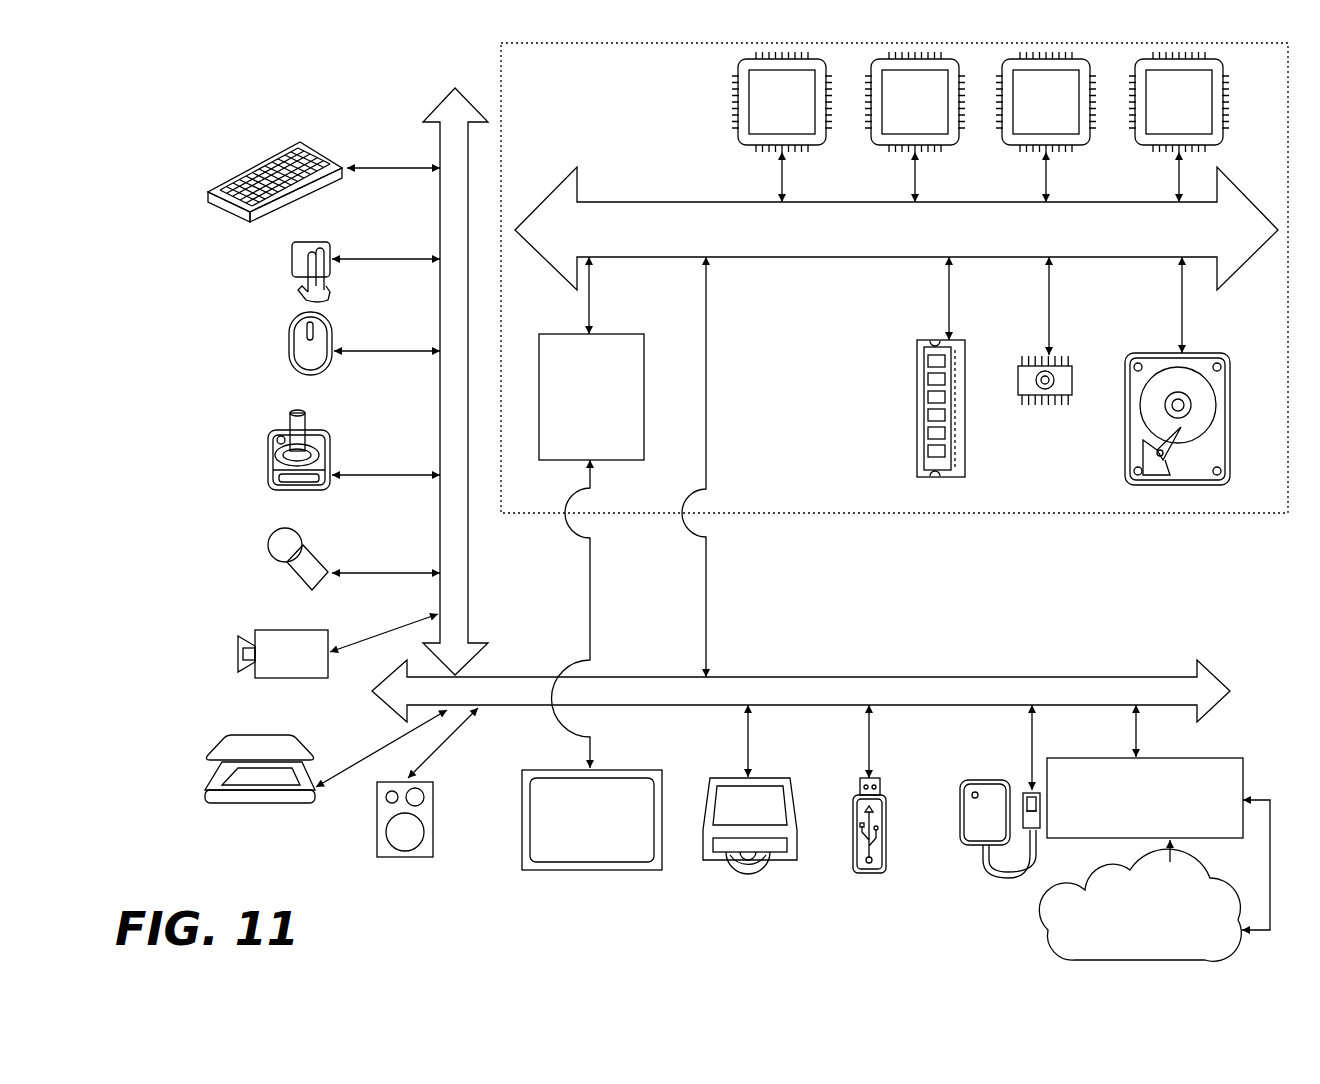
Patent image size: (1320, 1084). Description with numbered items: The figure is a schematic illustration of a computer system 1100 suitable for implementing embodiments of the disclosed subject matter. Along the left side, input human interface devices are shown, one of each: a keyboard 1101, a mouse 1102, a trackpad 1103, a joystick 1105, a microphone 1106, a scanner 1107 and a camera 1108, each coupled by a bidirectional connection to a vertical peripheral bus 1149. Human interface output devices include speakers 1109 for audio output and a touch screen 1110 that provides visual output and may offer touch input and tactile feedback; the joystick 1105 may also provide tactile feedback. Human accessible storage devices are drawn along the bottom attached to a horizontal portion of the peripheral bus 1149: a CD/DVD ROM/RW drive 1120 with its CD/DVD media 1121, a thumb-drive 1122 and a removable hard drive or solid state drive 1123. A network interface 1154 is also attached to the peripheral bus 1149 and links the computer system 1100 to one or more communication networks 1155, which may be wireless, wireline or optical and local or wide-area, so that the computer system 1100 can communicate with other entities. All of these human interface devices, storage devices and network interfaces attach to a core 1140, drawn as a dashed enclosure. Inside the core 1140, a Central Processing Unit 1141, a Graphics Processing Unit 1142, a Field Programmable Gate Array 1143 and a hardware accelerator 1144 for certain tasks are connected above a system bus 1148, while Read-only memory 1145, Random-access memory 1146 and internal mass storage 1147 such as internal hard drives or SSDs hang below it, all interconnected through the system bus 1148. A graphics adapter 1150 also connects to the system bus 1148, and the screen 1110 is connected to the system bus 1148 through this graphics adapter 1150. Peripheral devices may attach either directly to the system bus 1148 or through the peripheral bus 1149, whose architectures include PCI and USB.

The computer system 1100 is at (175, 91).
The keyboard 1101 is at (207, 196).
The mouse 1102 is at (290, 342).
The trackpad 1103 is at (290, 264).
The joystick 1105 is at (268, 472).
The microphone 1106 is at (268, 544).
The scanner 1107 is at (205, 790).
The camera 1108 is at (238, 654).
The speakers 1109 is at (407, 858).
The touch screen 1110 is at (590, 872).
The CD/DVD ROM/RW 1120 is at (792, 862).
The CD/DVD media 1121 is at (734, 866).
The thumb-drive 1122 is at (872, 876).
The removable hard drive or solid state drive 1123 is at (975, 848).
The core 1140 is at (887, 514).
The Central Processing Unit 1141 is at (782, 127).
The Graphics Processing Unit 1142 is at (915, 127).
The Field Programmable Gate Array 1143 is at (1046, 127).
The hardware accelerator 1144 is at (1179, 127).
The Read-only memory 1145 is at (1038, 407).
The Random-access memory 1146 is at (917, 432).
The internal mass storage 1147 is at (1140, 352).
The system bus 1148 is at (896, 228).
The peripheral bus 1149 is at (440, 132).
The graphics adapter 1150 is at (591, 512).
The network interface 1154 is at (1145, 771).
The communication networks 1155 is at (1046, 932).